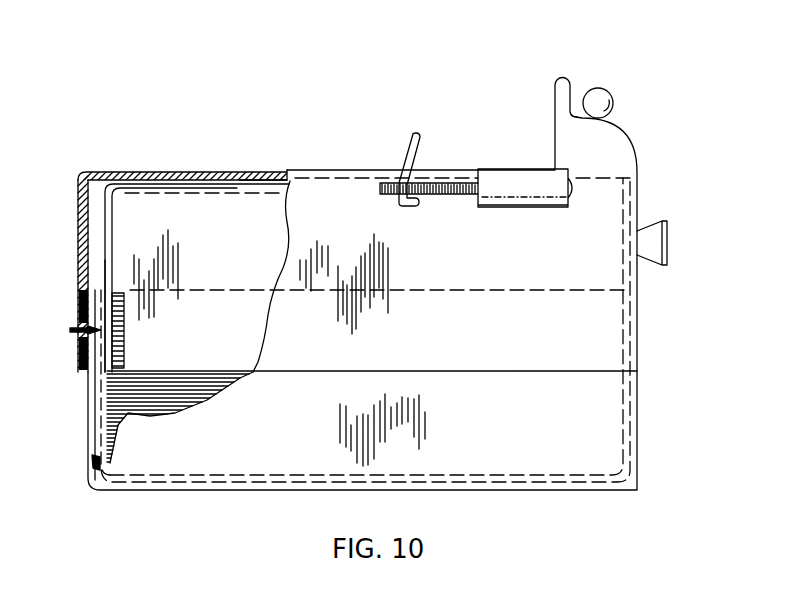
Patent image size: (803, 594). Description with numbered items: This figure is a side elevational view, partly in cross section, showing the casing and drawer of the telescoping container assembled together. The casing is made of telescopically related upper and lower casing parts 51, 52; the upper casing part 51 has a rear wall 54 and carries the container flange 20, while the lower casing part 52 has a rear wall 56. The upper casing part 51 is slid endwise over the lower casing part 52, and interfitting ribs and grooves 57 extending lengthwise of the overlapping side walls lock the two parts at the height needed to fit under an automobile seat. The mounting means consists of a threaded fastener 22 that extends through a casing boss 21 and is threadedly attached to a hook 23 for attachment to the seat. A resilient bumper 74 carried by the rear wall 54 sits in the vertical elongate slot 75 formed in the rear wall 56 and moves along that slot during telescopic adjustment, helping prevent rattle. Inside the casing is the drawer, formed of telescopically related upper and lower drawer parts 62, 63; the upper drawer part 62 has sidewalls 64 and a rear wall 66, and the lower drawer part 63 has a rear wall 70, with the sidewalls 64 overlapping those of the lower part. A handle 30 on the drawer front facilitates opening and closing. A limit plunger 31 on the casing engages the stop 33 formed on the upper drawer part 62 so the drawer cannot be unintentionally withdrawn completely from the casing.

The container flange 20 is at (554, 84).
The casing boss 21 is at (526, 208).
The threaded fastener 22 is at (443, 180).
The hook 23 is at (407, 141).
The handle 30 is at (668, 233).
The limit plunger 31 is at (607, 92).
The stop 33 is at (255, 170).
The upper casing part 51 is at (140, 171).
The lower casing part 52 is at (146, 492).
The rear wall 54 is at (78, 238).
The rear wall 56 is at (89, 413).
The ribs and grooves 57 is at (203, 397).
The upper drawer part 62 is at (276, 176).
The lower drawer part 63 is at (243, 483).
The sidewalls 64 is at (125, 217).
The rear wall 66 is at (105, 262).
The rear wall 70 is at (96, 378).
The resilient bumper 74 is at (76, 329).
The slot 75 is at (92, 447).